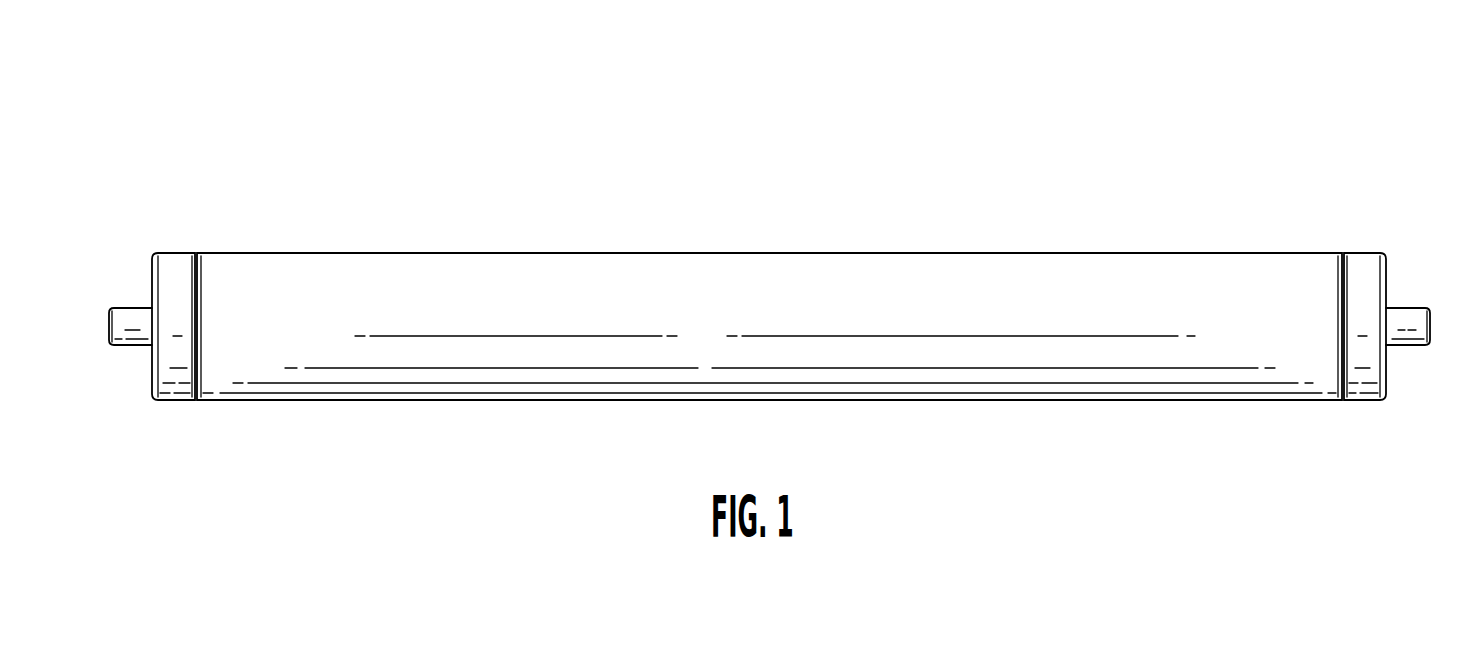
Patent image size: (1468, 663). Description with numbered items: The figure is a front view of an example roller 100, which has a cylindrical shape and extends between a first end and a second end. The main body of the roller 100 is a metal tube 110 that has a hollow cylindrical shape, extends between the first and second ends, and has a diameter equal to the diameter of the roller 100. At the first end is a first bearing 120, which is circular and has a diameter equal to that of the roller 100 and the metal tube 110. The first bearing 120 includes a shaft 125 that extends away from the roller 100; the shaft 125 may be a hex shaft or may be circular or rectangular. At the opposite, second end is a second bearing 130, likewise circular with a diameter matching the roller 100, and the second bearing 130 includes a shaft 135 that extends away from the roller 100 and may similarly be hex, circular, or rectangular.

The roller 100 is at (237, 103).
The metal tube 110 is at (672, 270).
The first bearing 120 is at (177, 252).
The shaft 125 is at (133, 317).
The second bearing 130 is at (1367, 265).
The shaft 135 is at (1407, 315).